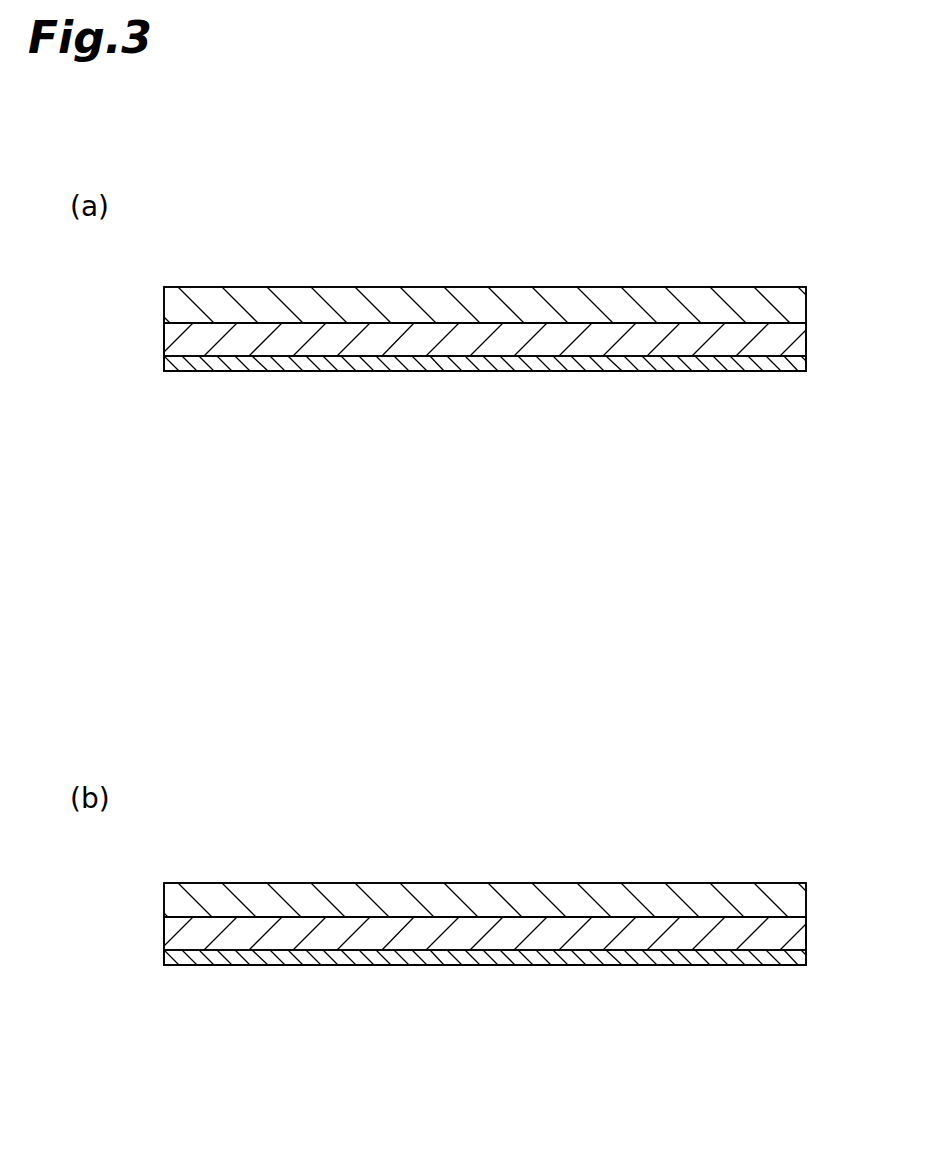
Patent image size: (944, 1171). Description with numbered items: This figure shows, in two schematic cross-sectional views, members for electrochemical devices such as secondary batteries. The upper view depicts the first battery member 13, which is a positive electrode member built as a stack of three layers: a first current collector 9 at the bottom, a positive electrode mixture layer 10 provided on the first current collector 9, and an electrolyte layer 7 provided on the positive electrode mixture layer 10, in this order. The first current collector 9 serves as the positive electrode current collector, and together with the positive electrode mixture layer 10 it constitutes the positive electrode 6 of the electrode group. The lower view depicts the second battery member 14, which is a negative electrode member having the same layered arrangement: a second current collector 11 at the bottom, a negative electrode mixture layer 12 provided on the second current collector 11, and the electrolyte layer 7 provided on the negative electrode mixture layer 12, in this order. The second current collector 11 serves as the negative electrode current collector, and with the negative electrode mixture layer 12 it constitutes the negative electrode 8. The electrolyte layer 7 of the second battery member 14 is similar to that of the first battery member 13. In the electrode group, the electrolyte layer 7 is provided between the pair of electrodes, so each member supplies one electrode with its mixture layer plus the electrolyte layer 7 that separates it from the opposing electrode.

The first battery member 13 is at (765, 253).
The second battery member 14 is at (765, 848).
The electrolyte layer 7 is at (795, 306).
The positive electrode 6 is at (533, 358).
The positive electrode mixture layer 10 is at (793, 347).
The first current collector 9 is at (806, 366).
The negative electrode 8 is at (532, 951).
The negative electrode mixture layer 12 is at (792, 940).
The second current collector 11 is at (806, 958).